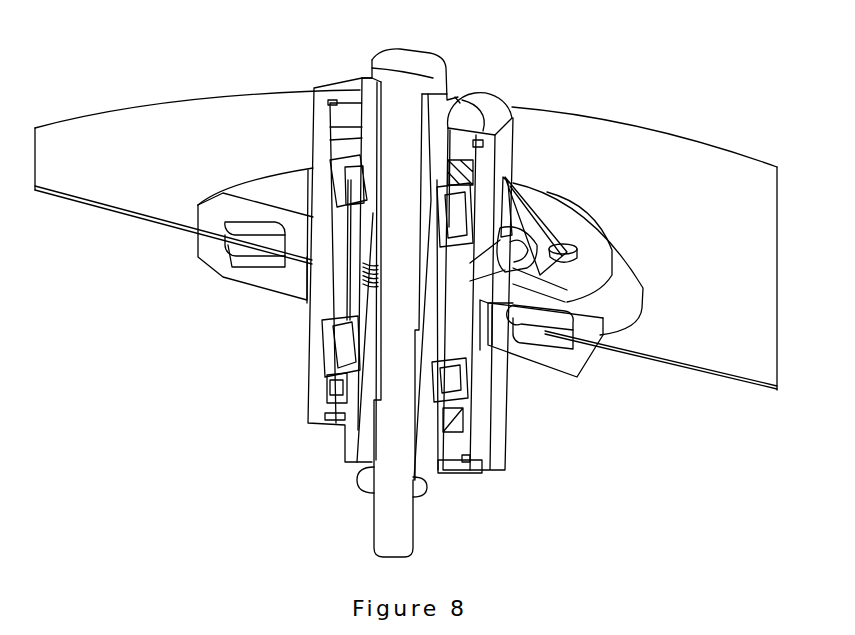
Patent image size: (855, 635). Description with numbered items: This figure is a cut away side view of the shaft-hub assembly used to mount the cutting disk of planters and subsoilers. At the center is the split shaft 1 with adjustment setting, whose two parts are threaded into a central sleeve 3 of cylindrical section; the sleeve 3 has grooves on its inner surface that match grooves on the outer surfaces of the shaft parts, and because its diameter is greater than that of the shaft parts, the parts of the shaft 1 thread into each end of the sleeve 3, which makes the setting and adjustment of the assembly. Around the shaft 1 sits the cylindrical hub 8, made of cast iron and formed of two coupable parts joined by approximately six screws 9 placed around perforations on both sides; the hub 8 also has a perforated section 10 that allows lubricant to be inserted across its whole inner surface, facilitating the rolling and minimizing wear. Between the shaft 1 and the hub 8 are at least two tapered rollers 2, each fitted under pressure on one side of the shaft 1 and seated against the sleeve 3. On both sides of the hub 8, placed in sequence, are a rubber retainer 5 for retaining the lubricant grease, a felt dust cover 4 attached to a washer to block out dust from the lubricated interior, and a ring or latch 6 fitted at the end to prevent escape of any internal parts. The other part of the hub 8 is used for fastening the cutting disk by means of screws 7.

The split shaft 1 is at (447, 477).
The tapered roller 2 is at (450, 383).
The central sleeve 3 is at (355, 270).
The dust cover 4 is at (325, 383).
The retainer 5 is at (463, 100).
The ring or latch 6 is at (332, 103).
The screw 7 is at (371, 516).
The cylindrical hub 8 is at (617, 285).
The screw 9 is at (568, 258).
The perforated section 10 is at (500, 258).